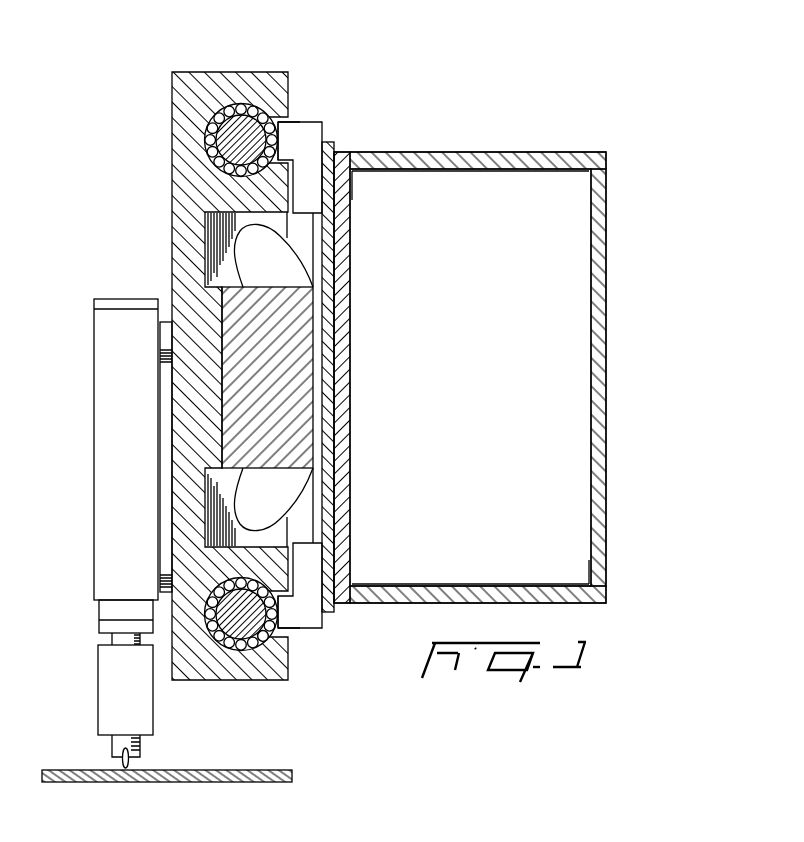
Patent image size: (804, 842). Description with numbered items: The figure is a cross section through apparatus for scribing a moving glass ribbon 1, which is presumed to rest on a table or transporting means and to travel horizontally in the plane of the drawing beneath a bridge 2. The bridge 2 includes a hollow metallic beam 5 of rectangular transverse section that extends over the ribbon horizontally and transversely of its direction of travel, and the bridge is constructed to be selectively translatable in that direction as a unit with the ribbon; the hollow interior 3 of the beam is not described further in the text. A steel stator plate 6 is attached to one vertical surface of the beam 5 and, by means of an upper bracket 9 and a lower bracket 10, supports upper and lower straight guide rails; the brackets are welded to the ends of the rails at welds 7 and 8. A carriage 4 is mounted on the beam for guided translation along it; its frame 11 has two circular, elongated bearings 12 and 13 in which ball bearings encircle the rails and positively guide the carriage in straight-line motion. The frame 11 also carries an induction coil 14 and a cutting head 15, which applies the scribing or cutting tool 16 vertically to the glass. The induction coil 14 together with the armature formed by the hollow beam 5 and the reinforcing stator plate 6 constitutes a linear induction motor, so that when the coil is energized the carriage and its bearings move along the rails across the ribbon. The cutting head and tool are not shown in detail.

The glass ribbon 1 is at (148, 784).
The bridge 2 is at (570, 550).
The interior of housing 3 is at (403, 188).
The carriage 4 is at (202, 102).
The hollow metallic beam 5 is at (513, 153).
The stator plate 6 is at (336, 150).
The weld 7 is at (279, 126).
The weld 8 is at (281, 629).
The bracket 9 is at (309, 134).
The bracket 10 is at (314, 620).
The frame 11 is at (220, 660).
The bearing 12 is at (243, 105).
The bearing 13 is at (243, 624).
The induction coil 14 is at (300, 352).
The cutting head 15 is at (105, 356).
The cutting tool 16 is at (124, 764).